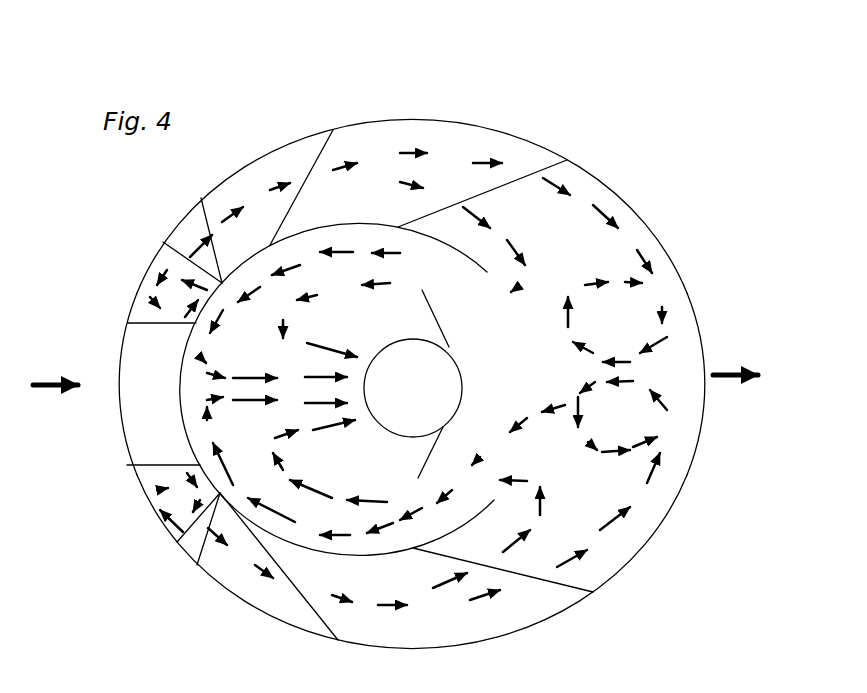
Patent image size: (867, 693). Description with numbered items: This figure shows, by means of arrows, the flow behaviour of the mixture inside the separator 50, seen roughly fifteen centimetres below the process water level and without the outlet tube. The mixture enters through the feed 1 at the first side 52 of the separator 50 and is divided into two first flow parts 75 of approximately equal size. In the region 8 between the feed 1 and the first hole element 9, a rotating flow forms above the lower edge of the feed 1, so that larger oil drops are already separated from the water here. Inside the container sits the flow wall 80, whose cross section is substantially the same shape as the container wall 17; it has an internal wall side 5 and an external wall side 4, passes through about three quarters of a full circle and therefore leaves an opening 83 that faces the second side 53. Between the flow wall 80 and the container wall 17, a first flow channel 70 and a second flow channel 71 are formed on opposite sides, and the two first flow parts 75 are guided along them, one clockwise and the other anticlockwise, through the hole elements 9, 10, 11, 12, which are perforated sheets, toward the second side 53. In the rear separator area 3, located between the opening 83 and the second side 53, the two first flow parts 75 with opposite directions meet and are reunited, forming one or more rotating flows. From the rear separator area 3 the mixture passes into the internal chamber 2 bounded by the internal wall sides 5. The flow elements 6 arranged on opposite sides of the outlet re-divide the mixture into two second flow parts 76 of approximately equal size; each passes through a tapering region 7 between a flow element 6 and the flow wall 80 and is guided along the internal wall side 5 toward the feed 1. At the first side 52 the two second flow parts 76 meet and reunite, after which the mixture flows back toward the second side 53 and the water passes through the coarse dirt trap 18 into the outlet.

The feed 1 is at (120, 352).
The internal chamber 2 is at (262, 353).
The rear separator area 3 is at (683, 385).
The external wall side 4 is at (340, 225).
The internal wall side 5 is at (307, 240).
The flow element 6 is at (448, 322).
The tapering region 7 is at (486, 302).
The region 8 is at (186, 312).
The hole element 9 is at (178, 240).
The hole element 10 is at (212, 200).
The hole element 11 is at (333, 128).
The hole element 12 is at (542, 155).
The container wall 17 is at (428, 116).
The coarse dirt trap 18 is at (375, 352).
The separator 50 is at (654, 144).
The first side 52 is at (138, 494).
The second side 53 is at (656, 235).
The first flow channel 70 is at (465, 192).
The second flow channel 71 is at (455, 631).
The first flow part 75 is at (278, 182).
The second flow part 76 is at (424, 296).
The flow wall 80 is at (183, 427).
The opening 83 is at (520, 358).